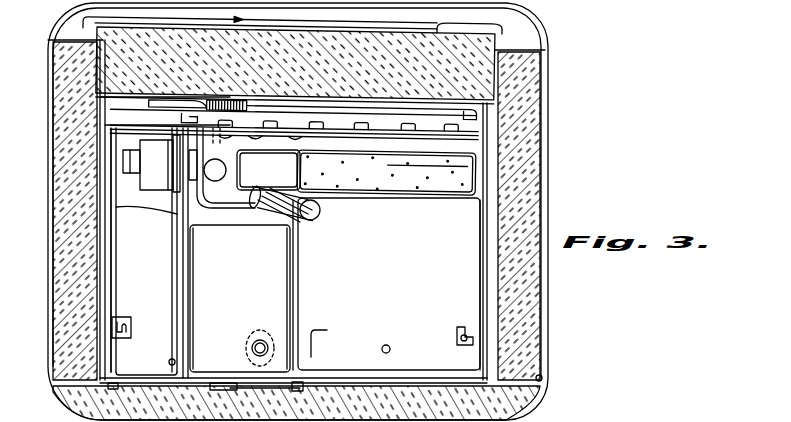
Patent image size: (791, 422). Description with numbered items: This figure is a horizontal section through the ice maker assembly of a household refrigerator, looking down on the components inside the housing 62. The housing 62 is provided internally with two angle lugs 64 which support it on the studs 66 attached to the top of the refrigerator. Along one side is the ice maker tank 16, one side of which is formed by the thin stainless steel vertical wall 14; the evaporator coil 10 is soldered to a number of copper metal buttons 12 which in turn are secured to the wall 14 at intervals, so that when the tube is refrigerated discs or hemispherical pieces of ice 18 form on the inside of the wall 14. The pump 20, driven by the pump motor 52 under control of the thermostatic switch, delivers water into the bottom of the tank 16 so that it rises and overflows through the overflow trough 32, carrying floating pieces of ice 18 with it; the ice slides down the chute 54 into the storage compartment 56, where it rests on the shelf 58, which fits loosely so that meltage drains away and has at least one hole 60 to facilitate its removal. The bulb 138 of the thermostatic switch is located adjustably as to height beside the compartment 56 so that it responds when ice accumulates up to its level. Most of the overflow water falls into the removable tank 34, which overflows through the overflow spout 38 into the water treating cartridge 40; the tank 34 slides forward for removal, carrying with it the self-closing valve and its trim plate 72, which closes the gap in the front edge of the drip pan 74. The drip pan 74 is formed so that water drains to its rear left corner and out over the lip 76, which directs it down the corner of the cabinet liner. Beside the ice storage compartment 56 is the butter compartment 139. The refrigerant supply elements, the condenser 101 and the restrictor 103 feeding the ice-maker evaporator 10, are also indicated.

The condenser 101 is at (537, 25).
The restrictor 103 is at (190, 101).
The lip 76 is at (108, 102).
The drip pan 74 is at (113, 125).
The housing 62 is at (118, 178).
The butter compartment 139 is at (146, 290).
The pump motor 52 is at (160, 163).
The pump 20 is at (235, 210).
The overflow trough 32 is at (259, 176).
The pieces of ice 18 is at (318, 210).
The chute 54 is at (275, 217).
The evaporator coil 10 is at (347, 128).
The vertical wall 14 is at (382, 130).
The ice maker tank 16 is at (430, 128).
The metal buttons 12 is at (427, 131).
The overflow spout 38 is at (386, 172).
The water treating cartridge 40 is at (428, 171).
The storage compartment 56 is at (386, 284).
The bulb 138 is at (478, 241).
The removable tank 34 is at (204, 357).
The angle lugs 64 is at (118, 317).
The studs 66 is at (124, 338).
The shelf 58 is at (329, 340).
The hole 60 is at (389, 346).
The trim plate 72 is at (249, 386).